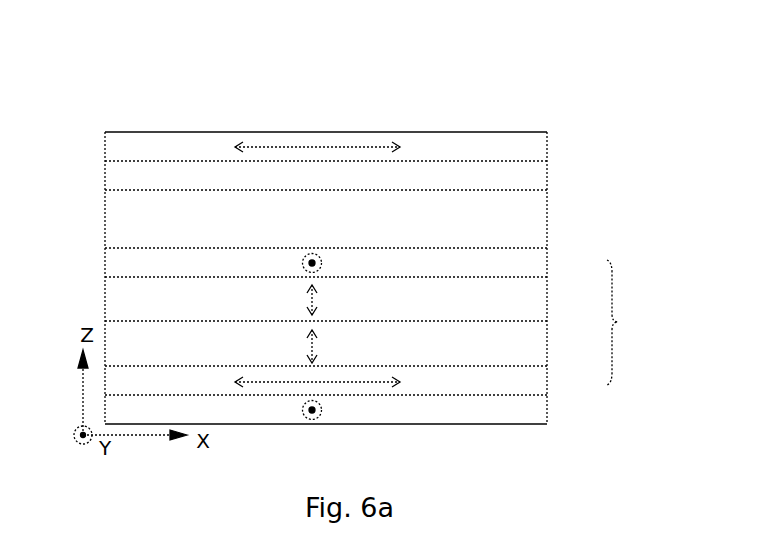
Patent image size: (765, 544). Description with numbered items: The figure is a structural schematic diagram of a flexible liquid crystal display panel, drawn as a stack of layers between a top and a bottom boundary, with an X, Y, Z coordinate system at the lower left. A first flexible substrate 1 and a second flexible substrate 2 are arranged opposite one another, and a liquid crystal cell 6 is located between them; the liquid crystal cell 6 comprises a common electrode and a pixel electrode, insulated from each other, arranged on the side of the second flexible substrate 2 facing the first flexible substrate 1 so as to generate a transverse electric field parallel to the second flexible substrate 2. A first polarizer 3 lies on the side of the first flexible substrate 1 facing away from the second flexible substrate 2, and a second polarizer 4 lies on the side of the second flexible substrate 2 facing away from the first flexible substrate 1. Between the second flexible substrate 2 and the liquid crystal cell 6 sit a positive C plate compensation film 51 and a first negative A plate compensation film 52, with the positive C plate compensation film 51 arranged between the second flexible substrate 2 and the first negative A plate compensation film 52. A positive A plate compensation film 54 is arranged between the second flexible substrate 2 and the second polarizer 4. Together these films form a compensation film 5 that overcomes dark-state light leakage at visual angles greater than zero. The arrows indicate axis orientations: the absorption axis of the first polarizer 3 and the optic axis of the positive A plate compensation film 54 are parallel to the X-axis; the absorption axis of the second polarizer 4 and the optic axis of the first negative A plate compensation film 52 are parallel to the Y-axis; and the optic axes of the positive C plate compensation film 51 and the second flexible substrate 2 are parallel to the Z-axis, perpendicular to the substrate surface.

The first flexible substrate 1 is at (135, 175).
The second flexible substrate 2 is at (128, 343).
The first polarizer 3 is at (326, 130).
The second polarizer 4 is at (326, 431).
The compensation film 5 is at (621, 322).
The liquid crystal cell 6 is at (512, 218).
The positive C plate compensation film 51 is at (518, 301).
The first negative A plate compensation film 52 is at (512, 263).
The positive A plate compensation film 54 is at (518, 380).